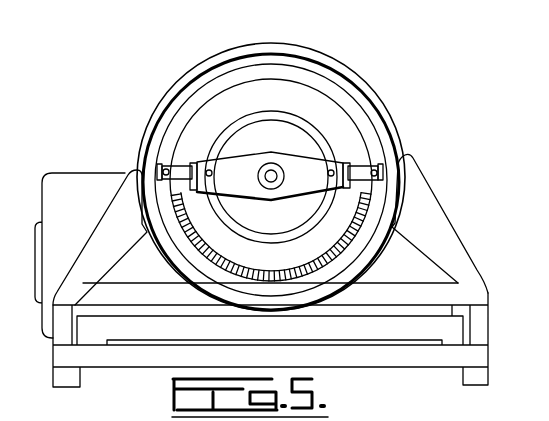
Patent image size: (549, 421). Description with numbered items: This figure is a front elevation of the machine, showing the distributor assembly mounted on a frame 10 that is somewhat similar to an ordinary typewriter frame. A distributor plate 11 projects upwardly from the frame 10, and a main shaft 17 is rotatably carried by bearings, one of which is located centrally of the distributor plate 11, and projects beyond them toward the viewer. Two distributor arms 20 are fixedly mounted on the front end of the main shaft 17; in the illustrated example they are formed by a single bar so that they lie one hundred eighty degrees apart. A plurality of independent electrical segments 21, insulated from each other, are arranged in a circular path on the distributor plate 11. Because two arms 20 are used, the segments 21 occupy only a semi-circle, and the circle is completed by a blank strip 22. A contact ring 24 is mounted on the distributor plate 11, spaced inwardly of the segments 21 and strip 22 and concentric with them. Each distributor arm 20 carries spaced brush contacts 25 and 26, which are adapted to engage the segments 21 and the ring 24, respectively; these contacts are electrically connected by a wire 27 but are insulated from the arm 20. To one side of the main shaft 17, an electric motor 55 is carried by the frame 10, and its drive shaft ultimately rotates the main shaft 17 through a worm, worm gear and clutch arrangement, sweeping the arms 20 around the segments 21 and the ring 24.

The frame 10 is at (489, 313).
The distributor plate 11 is at (337, 130).
The main shaft 17 is at (273, 172).
The distributor arms 20 is at (225, 158).
The electrical segments 21 is at (360, 243).
The blank strip 22 is at (235, 75).
The contact ring 24 is at (238, 118).
The brush contact 25 is at (162, 165).
The brush contact 26 is at (300, 205).
The wire 27 is at (210, 176).
The electric motor 55 is at (67, 183).